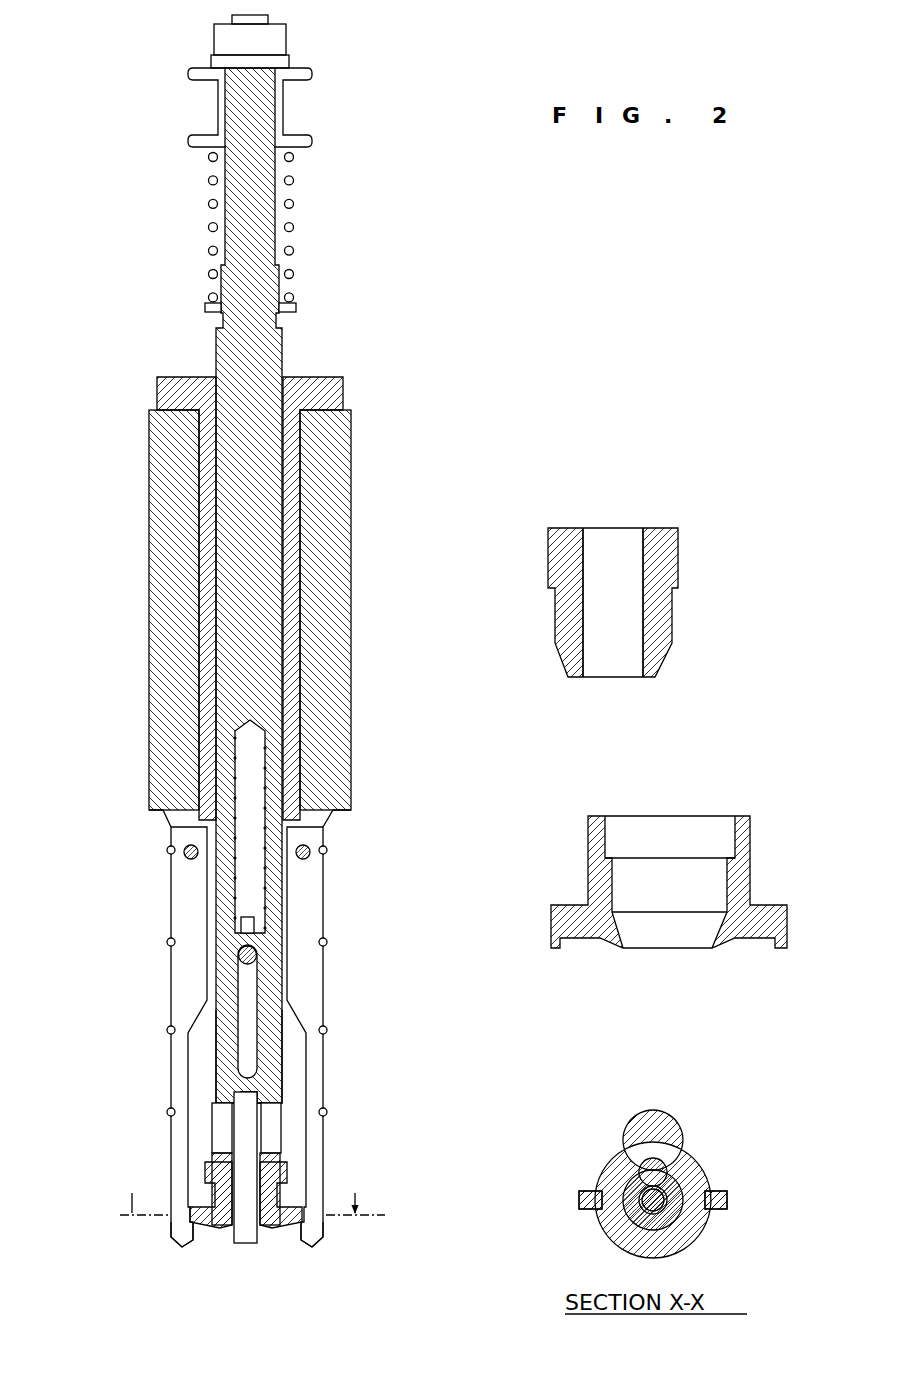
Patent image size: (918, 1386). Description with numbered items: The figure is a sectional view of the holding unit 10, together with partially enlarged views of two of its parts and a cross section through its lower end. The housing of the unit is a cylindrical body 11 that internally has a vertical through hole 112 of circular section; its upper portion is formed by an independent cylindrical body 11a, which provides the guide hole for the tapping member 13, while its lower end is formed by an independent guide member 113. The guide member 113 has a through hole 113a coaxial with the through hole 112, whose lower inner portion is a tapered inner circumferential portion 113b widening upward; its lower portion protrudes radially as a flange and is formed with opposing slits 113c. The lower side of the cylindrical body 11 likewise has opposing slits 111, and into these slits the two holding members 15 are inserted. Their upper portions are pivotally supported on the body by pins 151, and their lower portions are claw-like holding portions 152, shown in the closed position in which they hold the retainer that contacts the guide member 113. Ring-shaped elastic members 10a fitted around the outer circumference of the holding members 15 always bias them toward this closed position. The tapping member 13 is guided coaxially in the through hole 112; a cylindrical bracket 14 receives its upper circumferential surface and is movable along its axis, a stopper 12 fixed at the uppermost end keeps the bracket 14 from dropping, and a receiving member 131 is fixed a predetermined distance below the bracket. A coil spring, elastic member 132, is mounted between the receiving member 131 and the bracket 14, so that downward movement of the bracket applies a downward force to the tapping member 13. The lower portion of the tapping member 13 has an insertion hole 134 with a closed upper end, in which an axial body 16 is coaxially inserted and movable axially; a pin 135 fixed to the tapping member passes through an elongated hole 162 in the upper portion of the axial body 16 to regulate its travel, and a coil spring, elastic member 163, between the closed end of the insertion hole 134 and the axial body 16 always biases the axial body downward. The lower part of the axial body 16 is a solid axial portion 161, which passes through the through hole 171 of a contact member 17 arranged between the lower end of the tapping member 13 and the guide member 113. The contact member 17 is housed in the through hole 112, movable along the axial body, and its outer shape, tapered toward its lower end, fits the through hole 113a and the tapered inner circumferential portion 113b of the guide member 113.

The holding unit 10 is at (248, 631).
The ring-shaped elastic members 10a is at (166, 850).
The cylindrical body 11 is at (360, 657).
The cylindrical body (upper independent member) 11a is at (340, 377).
The slits 111 is at (327, 824).
The through hole 112 is at (220, 1140).
The guide member 113 is at (513, 1022).
The through hole 113a is at (663, 842).
The tapered inner circumferential portion 113b is at (668, 937).
The slits 113c is at (776, 922).
The stopper 12 is at (285, 37).
The tapping member 13 is at (220, 350).
The receiving member 131 is at (205, 309).
The elastic member 132 is at (296, 225).
The insertion hole 134 is at (253, 765).
The shaft (pin) 135 is at (258, 957).
The bracket 14 is at (212, 102).
The holding members 15 is at (175, 985).
The shafts (pins) 151 is at (188, 858).
The holding portions 152 is at (183, 1240).
The axial body 16 is at (240, 1082).
The axial portion 161 is at (242, 1246).
The elongated hole 162 is at (243, 1002).
The elastic member 163 is at (263, 790).
The contact member 17 is at (482, 841).
The through hole 171 is at (611, 545).